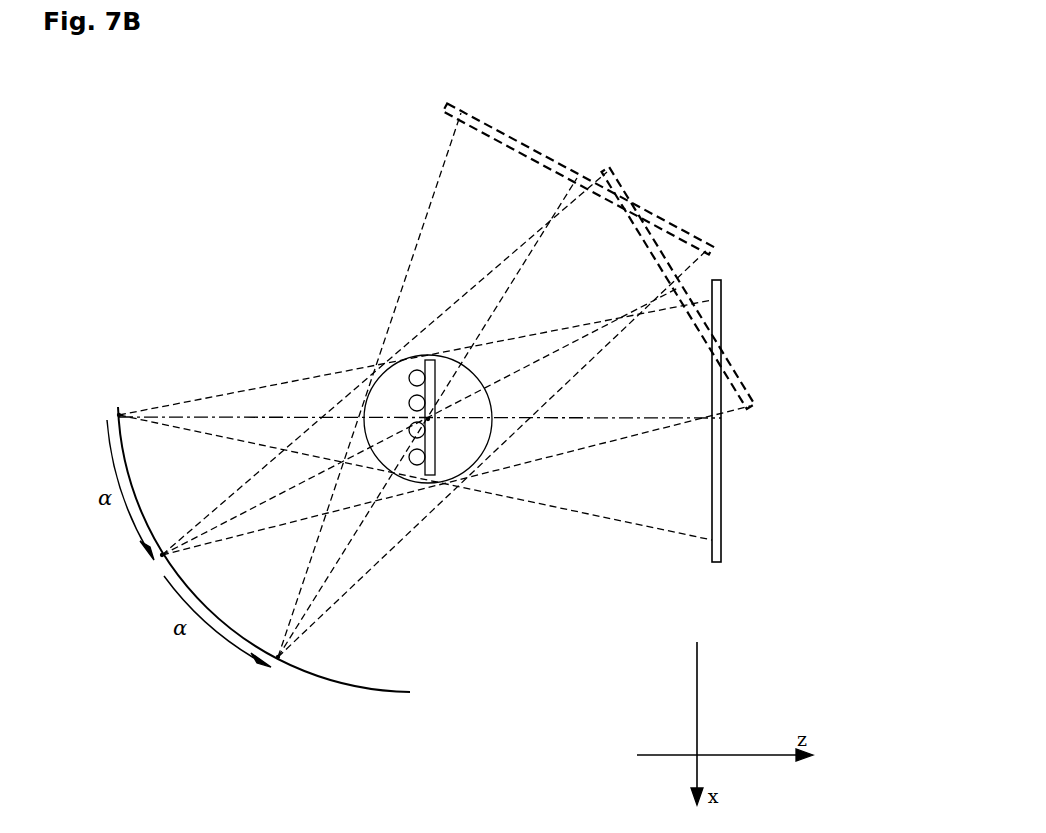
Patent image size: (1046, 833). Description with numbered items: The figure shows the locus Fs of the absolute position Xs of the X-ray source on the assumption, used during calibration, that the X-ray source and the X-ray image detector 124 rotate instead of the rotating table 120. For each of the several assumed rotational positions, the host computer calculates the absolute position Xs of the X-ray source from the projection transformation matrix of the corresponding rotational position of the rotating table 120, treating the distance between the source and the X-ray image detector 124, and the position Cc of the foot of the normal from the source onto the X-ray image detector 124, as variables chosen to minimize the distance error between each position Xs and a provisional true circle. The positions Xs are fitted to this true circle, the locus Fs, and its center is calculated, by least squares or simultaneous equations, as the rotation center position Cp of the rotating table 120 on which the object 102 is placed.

The sample 102 is at (435, 360).
The rotating table 120 is at (388, 400).
The X-ray image detector 124 is at (483, 123).
The position of the foot of the normal from the X-ray source to the X-ray image dete Cc is at (570, 178).
The rotation center position Cp is at (428, 418).
The absolute position of the X-ray source Xs is at (121, 412).
The locus of the absolute position of the X-ray source Fs is at (402, 690).